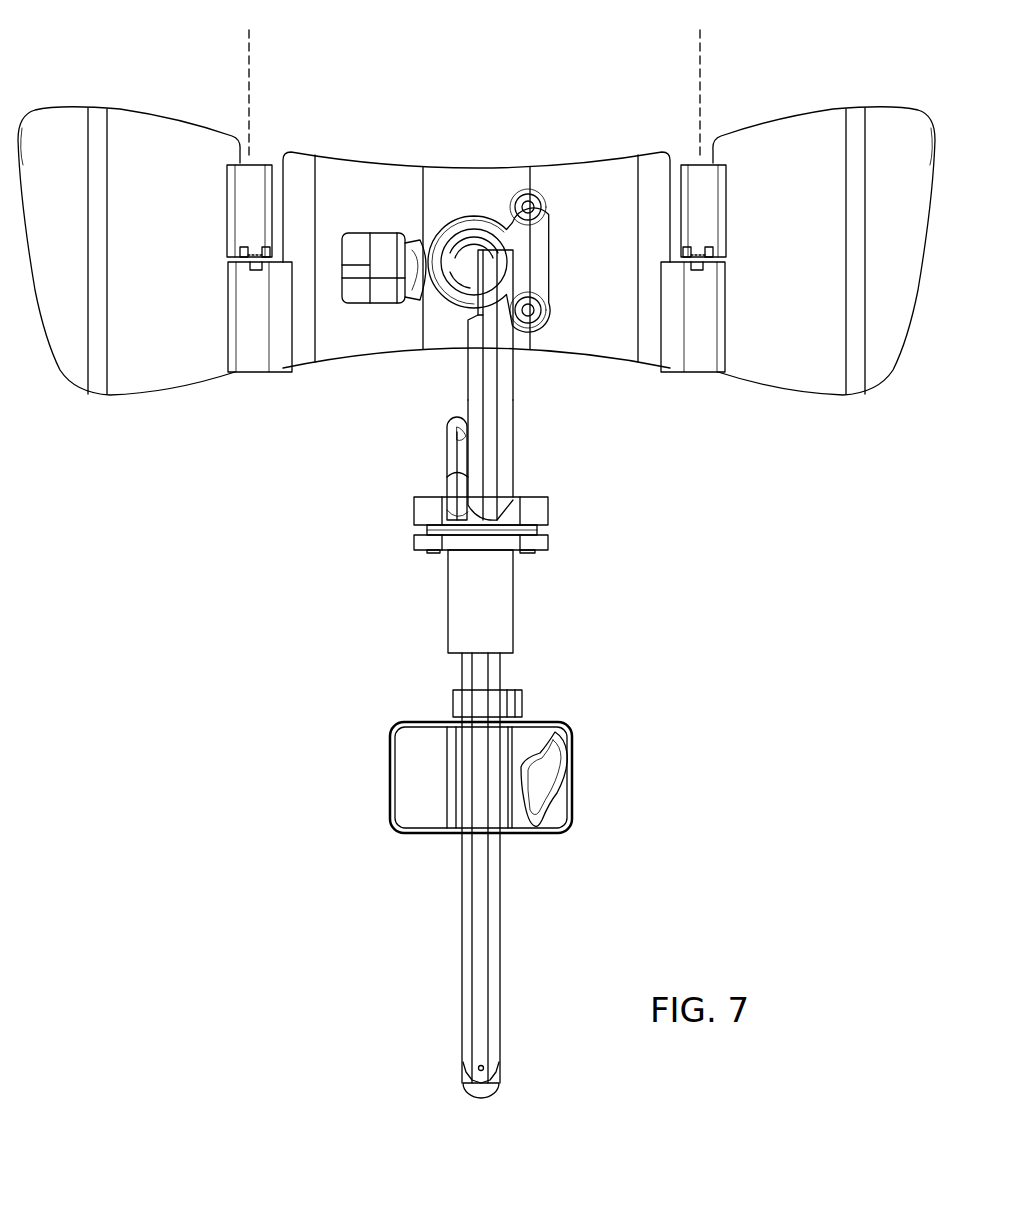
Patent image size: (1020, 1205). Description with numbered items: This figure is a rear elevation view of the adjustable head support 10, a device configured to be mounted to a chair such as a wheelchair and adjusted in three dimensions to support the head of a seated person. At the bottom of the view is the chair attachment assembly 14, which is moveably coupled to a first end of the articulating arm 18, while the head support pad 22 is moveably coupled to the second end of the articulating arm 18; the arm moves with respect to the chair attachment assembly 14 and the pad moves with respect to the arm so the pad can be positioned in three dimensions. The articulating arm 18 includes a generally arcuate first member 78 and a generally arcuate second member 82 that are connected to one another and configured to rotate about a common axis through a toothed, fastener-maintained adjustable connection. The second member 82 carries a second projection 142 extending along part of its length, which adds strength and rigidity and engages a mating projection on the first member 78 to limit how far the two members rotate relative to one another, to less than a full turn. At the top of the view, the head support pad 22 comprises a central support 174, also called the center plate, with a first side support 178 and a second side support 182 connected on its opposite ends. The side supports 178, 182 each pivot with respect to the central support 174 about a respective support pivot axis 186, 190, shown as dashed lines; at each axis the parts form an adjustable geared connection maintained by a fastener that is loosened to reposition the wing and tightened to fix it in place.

The adjustable head support 10 is at (273, 547).
The chair attachment assembly 14 is at (585, 781).
The articulating arm 18 is at (585, 489).
The head support pad 22 is at (357, 95).
The first member 78 is at (452, 460).
The second member 82 is at (508, 420).
The second projection 142 is at (467, 375).
The central support 174 is at (388, 192).
The first side support 178 is at (63, 160).
The second side support 182 is at (890, 160).
The first support pivot axis 186 is at (248, 73).
The second support pivot axis 190 is at (698, 75).